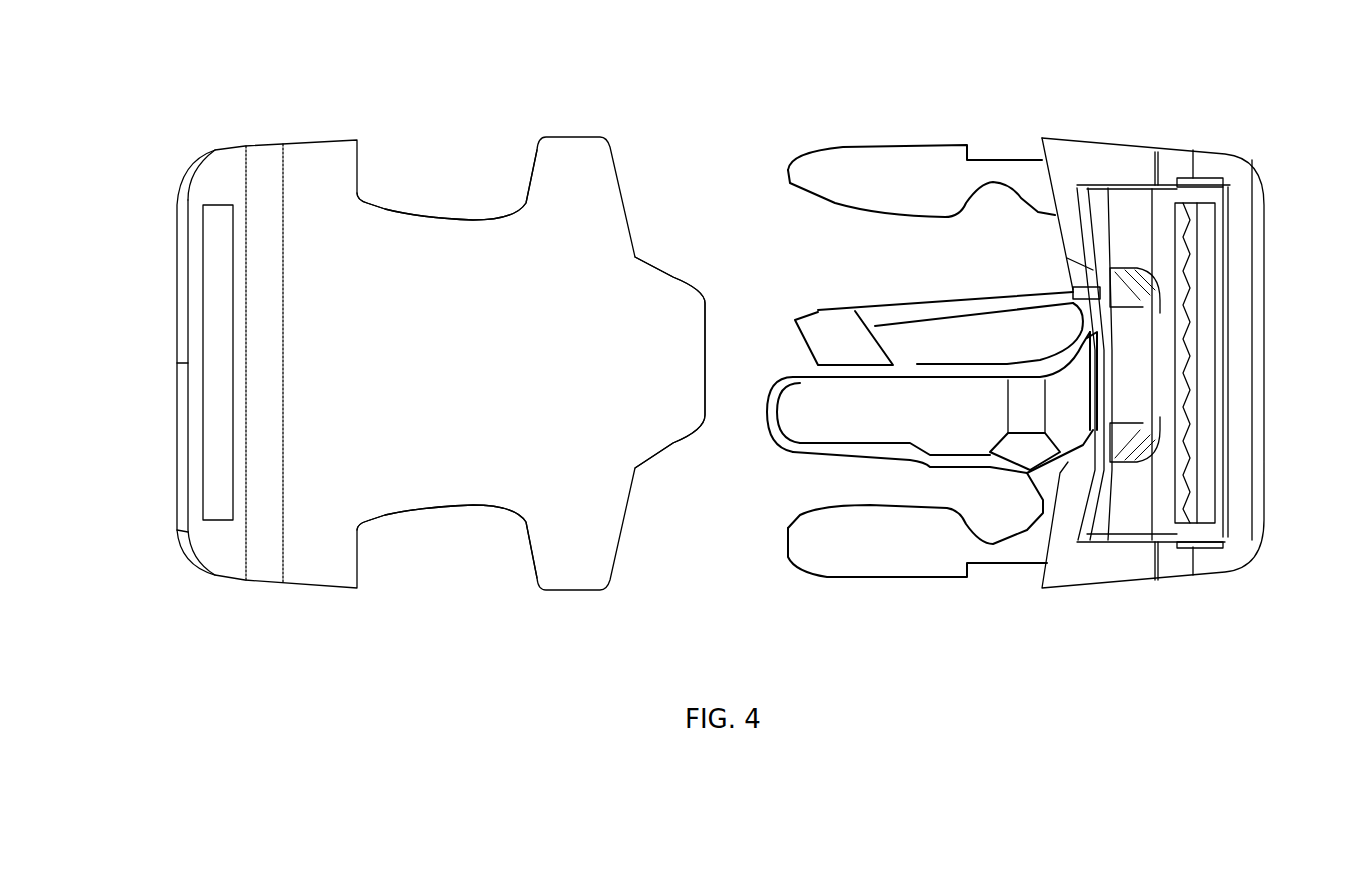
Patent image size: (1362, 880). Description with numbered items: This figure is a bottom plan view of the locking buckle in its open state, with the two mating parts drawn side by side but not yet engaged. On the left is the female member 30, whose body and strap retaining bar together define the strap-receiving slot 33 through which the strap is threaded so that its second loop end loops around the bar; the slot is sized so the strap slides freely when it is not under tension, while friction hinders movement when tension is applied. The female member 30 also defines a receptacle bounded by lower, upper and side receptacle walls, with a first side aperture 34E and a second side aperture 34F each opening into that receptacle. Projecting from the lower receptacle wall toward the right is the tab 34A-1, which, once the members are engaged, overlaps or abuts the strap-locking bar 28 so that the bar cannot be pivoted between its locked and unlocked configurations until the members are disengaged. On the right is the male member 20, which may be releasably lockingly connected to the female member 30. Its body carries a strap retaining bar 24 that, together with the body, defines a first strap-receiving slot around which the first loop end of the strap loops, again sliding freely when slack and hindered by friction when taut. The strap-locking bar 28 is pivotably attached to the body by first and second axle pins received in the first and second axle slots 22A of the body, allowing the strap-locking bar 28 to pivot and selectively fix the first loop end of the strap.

The female member 30 is at (330, 160).
The strap-receiving slot 33 is at (213, 465).
The second side aperture 34F is at (426, 170).
The first side aperture 34E is at (433, 576).
The tab 34A-1 is at (668, 310).
The male member 20 is at (915, 180).
The first and second axle slots 22A is at (1208, 180).
The strap retaining bar 24 is at (1258, 365).
The strap-locking bar 28 is at (1210, 328).